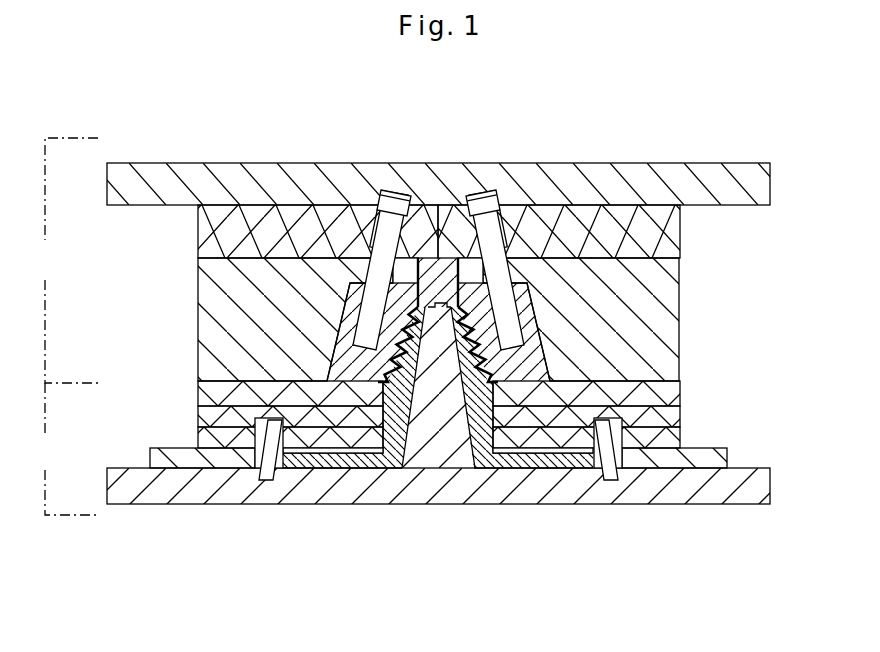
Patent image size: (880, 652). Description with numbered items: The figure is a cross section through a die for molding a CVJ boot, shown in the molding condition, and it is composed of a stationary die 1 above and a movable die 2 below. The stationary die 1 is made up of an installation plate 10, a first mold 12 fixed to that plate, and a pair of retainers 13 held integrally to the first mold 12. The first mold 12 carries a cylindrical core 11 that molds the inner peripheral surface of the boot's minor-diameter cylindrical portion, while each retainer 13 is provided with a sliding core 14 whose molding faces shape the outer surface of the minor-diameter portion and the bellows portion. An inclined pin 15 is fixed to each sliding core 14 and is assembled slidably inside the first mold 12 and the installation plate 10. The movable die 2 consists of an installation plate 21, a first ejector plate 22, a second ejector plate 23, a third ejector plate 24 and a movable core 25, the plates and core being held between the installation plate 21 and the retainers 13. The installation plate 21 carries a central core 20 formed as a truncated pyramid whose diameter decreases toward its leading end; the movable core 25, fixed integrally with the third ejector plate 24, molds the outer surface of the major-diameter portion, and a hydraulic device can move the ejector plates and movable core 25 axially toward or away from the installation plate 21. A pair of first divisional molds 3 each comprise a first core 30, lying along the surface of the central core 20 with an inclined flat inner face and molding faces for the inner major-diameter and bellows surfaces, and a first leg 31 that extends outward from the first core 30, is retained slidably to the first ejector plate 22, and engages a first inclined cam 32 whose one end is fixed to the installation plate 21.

The stationary die 1 is at (69, 260).
The movable die 2 is at (69, 449).
The first divisional mold 3 is at (395, 395).
The installation plate 10 is at (665, 172).
The cylindrical core 11 is at (440, 272).
The first mold 12 is at (667, 232).
The retainer 13 is at (217, 298).
The sliding core 14 is at (363, 293).
The inclined pin 15 is at (374, 225).
The central core 20 is at (441, 378).
The installation plate 21 is at (705, 490).
The first ejector plate 22 is at (700, 450).
The second ejector plate 23 is at (210, 435).
The third ejector plate 24 is at (210, 412).
The movable core 25 is at (210, 390).
The first core 30 is at (465, 400).
The first leg 31 is at (548, 460).
The first inclined cam 32 is at (273, 437).